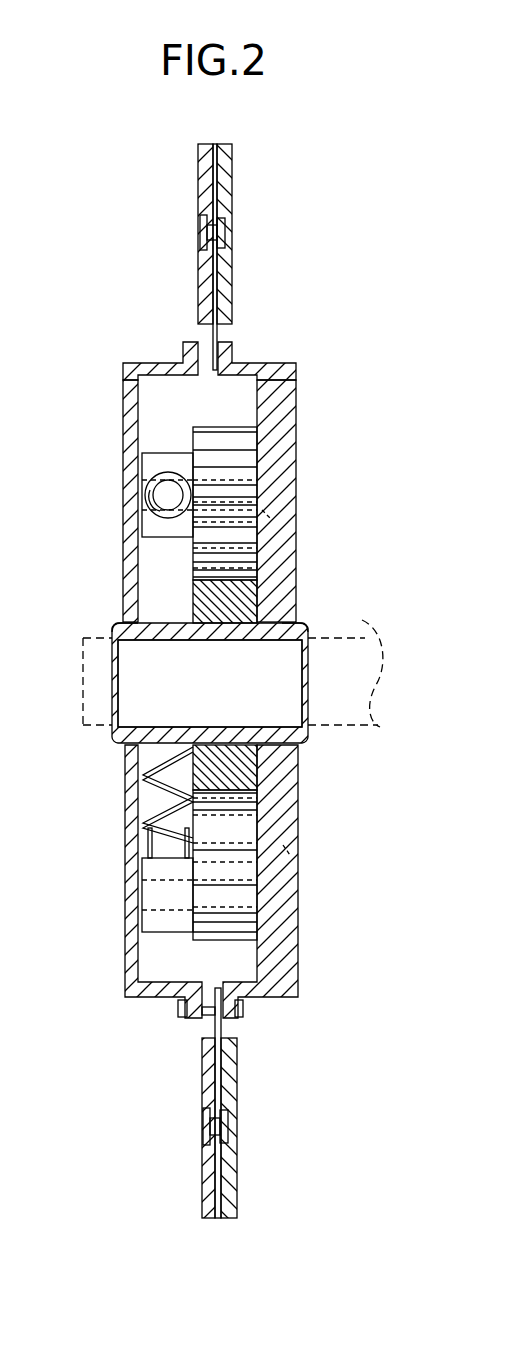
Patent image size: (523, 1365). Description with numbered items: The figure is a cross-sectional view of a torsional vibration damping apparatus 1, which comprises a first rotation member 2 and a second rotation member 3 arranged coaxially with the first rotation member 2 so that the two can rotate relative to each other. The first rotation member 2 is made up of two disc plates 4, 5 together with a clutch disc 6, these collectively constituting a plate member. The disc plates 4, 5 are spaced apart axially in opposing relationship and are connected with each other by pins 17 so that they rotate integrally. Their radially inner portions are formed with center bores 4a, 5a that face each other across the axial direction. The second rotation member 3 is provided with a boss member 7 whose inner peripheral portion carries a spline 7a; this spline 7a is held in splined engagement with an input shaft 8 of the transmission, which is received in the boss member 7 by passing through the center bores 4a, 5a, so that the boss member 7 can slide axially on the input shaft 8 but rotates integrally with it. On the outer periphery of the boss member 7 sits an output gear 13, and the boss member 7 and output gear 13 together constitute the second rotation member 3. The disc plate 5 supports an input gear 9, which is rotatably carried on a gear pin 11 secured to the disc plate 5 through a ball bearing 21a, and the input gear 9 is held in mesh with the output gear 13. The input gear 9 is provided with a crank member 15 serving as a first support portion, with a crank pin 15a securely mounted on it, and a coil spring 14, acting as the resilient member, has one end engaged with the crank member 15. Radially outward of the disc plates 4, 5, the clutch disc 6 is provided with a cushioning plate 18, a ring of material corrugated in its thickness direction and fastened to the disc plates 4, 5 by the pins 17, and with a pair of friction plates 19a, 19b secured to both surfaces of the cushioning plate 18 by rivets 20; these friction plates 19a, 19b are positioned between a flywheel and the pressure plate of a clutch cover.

The torsional vibration damping apparatus 1 is at (300, 326).
The first rotation member 2 is at (208, 680).
The second rotation member 3 is at (240, 660).
The disc plate 4 is at (128, 450).
The center bore 4a is at (112, 632).
The disc plate 5 is at (297, 460).
The center bore 5a is at (305, 615).
The clutch disc 6 is at (215, 255).
The boss member 7 is at (210, 660).
The spline 7a is at (196, 640).
The input shaft 8 is at (362, 622).
The input gear 9 is at (222, 433).
The gear pin 11 is at (272, 517).
The output gear 13 is at (140, 788).
The coil spring 14 is at (152, 512).
The crank member 15 is at (130, 691).
The crank pin 15a is at (158, 480).
The pin 17 is at (208, 1013).
The cushioning plate 18 is at (218, 330).
The friction plate 19a is at (198, 163).
The friction plate 19b is at (233, 160).
The rivet 20 is at (229, 1125).
The ball bearing 21a is at (195, 585).